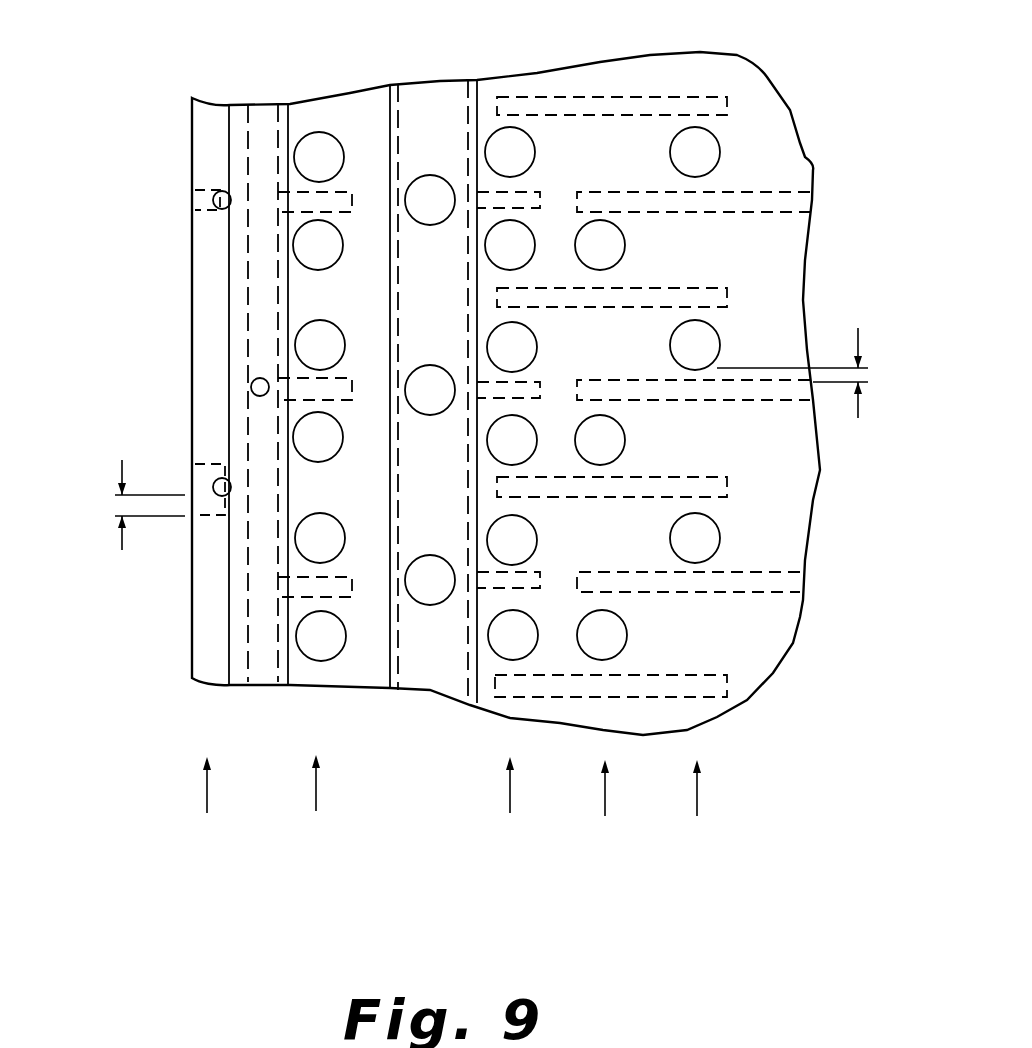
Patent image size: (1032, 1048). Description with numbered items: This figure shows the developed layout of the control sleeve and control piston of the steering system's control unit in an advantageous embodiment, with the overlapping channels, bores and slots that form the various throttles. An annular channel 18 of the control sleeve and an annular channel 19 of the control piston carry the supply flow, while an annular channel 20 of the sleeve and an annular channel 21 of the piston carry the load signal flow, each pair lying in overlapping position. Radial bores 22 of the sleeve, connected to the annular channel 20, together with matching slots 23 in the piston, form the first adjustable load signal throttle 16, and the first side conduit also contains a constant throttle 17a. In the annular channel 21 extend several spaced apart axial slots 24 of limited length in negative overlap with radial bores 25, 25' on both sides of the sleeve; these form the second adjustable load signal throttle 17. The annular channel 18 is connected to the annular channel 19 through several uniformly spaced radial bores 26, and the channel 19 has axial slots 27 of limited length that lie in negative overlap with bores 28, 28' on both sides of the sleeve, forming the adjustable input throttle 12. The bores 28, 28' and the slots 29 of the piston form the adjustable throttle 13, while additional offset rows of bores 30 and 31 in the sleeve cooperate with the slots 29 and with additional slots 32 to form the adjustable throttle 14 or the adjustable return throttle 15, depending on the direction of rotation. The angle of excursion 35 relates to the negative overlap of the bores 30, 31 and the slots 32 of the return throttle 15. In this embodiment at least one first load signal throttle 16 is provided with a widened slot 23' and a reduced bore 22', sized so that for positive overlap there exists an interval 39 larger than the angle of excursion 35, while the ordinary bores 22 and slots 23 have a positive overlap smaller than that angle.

The adjustable input throttle 12 is at (508, 807).
The adjustable throttle 13 is at (508, 807).
The adjustable throttle 14 is at (658, 808).
The adjustable return throttle 15 is at (658, 808).
The first adjustable load signal throttle 16 is at (212, 481).
The second adjustable load signal throttle 17 is at (339, 471).
The constant throttle 17a is at (251, 384).
The annular channel 18 is at (390, 86).
The annular channel 19 is at (437, 94).
The annular channel 20 is at (236, 104).
The annular channel 21 is at (260, 106).
The radial bores 22 is at (180, 224).
The reduced bore 22' is at (179, 535).
The slots 23 is at (175, 168).
The widened slot 23' is at (172, 460).
The axial slots 24 is at (348, 192).
The radial bores 25 is at (319, 347).
The radial bores 25' is at (319, 440).
The radial bores 26 is at (430, 390).
The axial slots 27 is at (535, 192).
The bores 28 is at (511, 346).
The bores 28' is at (511, 440).
The slots 29 is at (695, 97).
The bores 30 is at (601, 440).
The bores 31 is at (695, 345).
The slots 32 is at (807, 157).
The angle of excursion 35 is at (870, 368).
The interval 39 is at (100, 505).